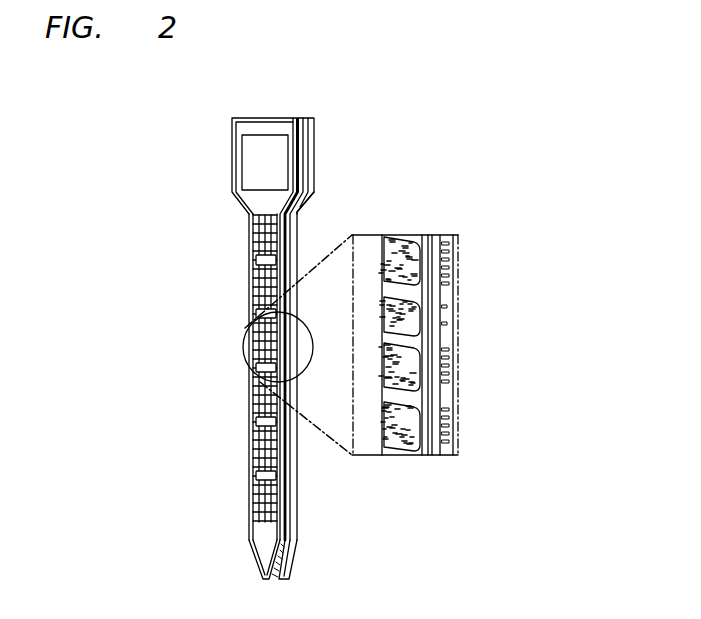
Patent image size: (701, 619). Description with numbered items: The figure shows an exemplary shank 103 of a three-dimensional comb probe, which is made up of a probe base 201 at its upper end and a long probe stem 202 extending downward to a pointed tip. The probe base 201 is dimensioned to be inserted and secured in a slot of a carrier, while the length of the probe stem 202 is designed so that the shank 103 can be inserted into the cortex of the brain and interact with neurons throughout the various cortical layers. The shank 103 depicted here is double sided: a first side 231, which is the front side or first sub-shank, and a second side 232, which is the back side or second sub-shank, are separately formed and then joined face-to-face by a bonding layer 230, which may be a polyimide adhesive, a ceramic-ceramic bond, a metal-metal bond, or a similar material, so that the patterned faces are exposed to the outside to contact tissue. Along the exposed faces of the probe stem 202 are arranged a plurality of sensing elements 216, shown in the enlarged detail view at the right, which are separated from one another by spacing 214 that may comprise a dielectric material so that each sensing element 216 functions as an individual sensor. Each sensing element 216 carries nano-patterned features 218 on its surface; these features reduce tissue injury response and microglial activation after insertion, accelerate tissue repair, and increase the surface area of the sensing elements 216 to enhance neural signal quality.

The shank 103 is at (272, 110).
The probe base 201 is at (212, 117).
The probe stem 202 is at (212, 222).
The bonding layer 230 is at (317, 180).
The first side 231 is at (299, 130).
The second side 232 is at (317, 153).
The spacing 214 is at (415, 349).
The sensing elements 216 is at (250, 448).
The nano-patterned features 218 is at (412, 248).